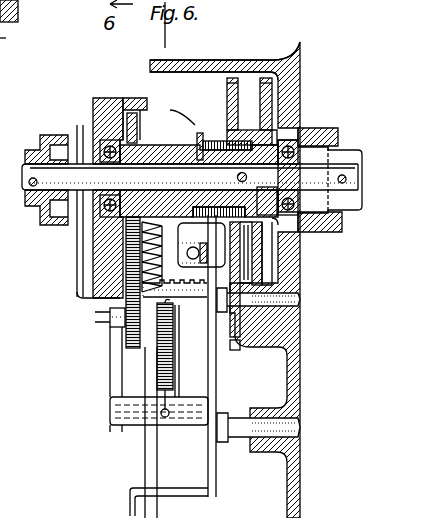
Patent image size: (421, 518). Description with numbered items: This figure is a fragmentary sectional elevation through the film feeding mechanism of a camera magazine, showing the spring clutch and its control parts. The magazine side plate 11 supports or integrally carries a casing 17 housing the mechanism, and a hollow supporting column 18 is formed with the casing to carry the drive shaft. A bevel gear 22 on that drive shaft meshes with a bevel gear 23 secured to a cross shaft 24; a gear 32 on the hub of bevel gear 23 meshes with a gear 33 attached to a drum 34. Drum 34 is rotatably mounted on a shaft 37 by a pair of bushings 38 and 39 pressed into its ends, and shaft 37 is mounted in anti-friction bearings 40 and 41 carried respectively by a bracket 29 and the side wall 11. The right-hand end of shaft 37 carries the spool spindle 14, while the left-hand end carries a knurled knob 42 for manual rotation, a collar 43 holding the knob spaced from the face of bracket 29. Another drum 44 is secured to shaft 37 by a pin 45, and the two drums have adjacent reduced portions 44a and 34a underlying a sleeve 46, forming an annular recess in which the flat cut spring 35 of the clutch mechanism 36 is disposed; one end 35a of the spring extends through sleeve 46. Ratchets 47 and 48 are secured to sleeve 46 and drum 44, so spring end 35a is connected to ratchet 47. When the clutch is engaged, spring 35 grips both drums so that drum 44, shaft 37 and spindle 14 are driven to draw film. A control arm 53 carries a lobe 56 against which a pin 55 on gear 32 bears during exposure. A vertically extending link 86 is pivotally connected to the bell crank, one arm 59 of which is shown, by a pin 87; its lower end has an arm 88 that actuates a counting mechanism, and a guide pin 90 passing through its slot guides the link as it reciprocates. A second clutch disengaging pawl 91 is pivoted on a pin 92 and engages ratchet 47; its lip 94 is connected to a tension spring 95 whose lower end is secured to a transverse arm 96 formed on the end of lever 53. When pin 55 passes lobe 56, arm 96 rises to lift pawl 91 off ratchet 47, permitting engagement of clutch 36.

The magazine side plate 11 is at (297, 368).
The spool spindle 14 is at (350, 152).
The casing 17 is at (166, 62).
The hollow supporting column 18 is at (158, 448).
The bevel gear 22 is at (108, 315).
The bevel gear 23 is at (120, 262).
The cross shaft 24 is at (247, 263).
The bracket 29 is at (94, 106).
The gear 32 is at (126, 283).
The gear 33 is at (133, 98).
The drum 34 is at (160, 150).
The reduced portion 34a is at (208, 205).
The flat cut spring 35 is at (211, 143).
The spring end 35a is at (197, 141).
The clutch mechanism 36 is at (194, 119).
The shaft 37 is at (189, 178).
The bushing 38 is at (199, 203).
The bushing 39 is at (179, 155).
The anti-friction bearing 40 is at (97, 217).
The anti-friction bearing 41 is at (299, 216).
The knurled knob 42 is at (38, 150).
The collar 43 is at (78, 140).
The drum 44 is at (298, 140).
The reduced portion 44a is at (263, 200).
The pin 45 is at (245, 174).
The sleeve 46 is at (226, 130).
The ratchet 47 is at (232, 78).
The ratchet 48 is at (264, 78).
The control arm 53 is at (113, 395).
The pin 55 is at (112, 324).
The lobe 56 is at (117, 356).
The arm 59 is at (228, 252).
The link 86 is at (208, 360).
The pin 87 is at (201, 245).
The arm 88 is at (168, 492).
The guide pin 90 is at (233, 428).
The clutch disengaging pawl 91 is at (238, 323).
The pin 92 is at (301, 300).
The lip 94 is at (175, 283).
The tension spring 95 is at (158, 364).
The transverse arm 96 is at (140, 413).